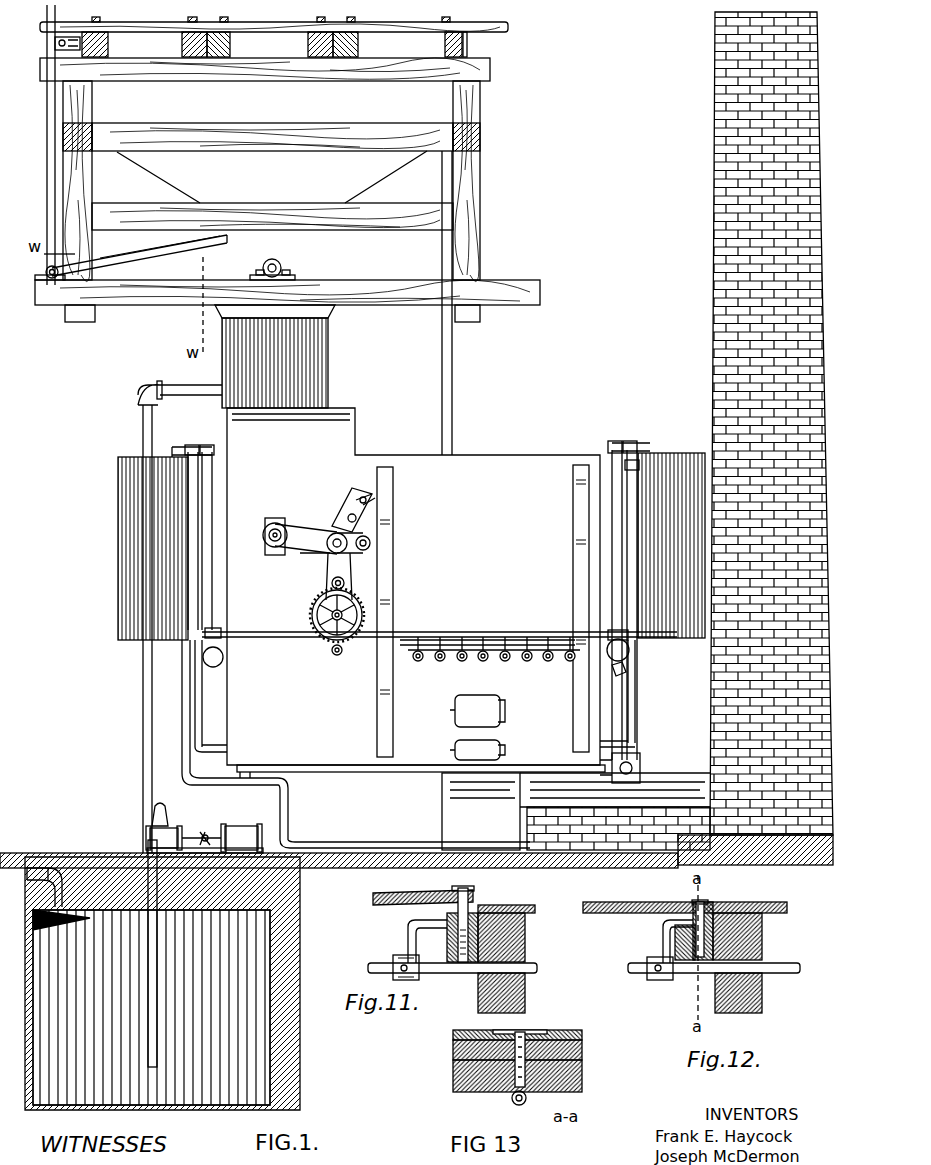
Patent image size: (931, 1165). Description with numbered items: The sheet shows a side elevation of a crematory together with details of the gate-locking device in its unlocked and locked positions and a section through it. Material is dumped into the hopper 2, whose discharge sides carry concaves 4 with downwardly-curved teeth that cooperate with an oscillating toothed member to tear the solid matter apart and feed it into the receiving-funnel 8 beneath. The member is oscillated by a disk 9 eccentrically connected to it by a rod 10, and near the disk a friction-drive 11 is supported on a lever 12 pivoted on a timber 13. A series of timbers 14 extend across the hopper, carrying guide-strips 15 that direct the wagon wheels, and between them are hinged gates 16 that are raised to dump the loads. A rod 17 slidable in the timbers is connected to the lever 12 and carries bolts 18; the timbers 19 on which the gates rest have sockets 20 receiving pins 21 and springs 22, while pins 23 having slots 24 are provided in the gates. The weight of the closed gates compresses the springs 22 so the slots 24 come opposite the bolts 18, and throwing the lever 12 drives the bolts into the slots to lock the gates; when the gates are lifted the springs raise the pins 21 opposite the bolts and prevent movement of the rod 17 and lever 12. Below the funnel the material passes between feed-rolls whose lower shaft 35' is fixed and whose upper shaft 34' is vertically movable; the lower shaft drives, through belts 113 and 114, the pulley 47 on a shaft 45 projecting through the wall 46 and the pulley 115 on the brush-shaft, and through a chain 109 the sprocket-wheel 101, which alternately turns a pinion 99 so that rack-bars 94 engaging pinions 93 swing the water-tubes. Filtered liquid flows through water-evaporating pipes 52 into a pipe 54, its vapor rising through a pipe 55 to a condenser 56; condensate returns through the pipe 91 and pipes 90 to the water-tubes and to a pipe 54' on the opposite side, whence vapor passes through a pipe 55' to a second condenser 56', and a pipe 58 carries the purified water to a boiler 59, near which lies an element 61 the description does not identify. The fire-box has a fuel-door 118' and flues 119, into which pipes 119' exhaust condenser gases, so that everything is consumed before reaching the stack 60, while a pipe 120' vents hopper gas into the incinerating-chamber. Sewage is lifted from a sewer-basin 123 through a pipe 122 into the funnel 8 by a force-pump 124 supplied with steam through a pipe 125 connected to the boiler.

In FIG. 1, the hopper 2 is at (372, 185).
In FIG. 1, the concaves 4 is at (290, 262).
In FIG. 1, the receiving-funnel 8 is at (330, 341).
In FIG. 1, the disk 9 is at (106, 270).
In FIG. 1, the rod 10 is at (136, 258).
In FIG. 1, the friction-drive 11 is at (43, 270).
In FIG. 1, the lever 12 is at (47, 212).
In FIG. 1, the timber 13 is at (158, 305).
In FIG. 1, the timbers 14 is at (109, 45).
In FIG. 11, the timbers 14 is at (527, 953).
In FIG. 12, the timbers 14 is at (750, 994).
In FIG. 13, the timbers 14 is at (568, 1072).
In FIG. 1, the guide-strips 15 is at (100, 18).
In FIG. 11, the hinged gates 16 is at (405, 893).
In FIG. 12, the hinged gates 16 is at (635, 902).
In FIG. 13, the hinged gates 16 is at (550, 1024).
In FIG. 1, the rod 17 is at (55, 43).
In FIG. 12, the rod 17 is at (685, 973).
In FIG. 13, the rod 17 is at (510, 1100).
In FIG. 12, the bolts 18 is at (663, 938).
In FIG. 13, the bolts 18 is at (526, 1098).
In FIG. 11, the timbers 19 is at (450, 955).
In FIG. 12, the timbers 19 is at (713, 940).
In FIG. 11, the sockets 20 is at (470, 898).
In FIG. 11, the pins 21 is at (447, 915).
In FIG. 12, the pins 21 is at (720, 920).
In FIG. 13, the pins 21 is at (515, 1062).
In FIG. 11, the springs 22 is at (470, 945).
In FIG. 12, the springs 22 is at (700, 952).
In FIG. 13, the springs 22 is at (515, 1086).
In FIG. 12, the pins 23 is at (710, 900).
In FIG. 13, the pins 23 is at (545, 1030).
In FIG. 13, the slots 24 is at (530, 1049).
In FIG. 1, the shaft of upper roll 34' is at (415, 499).
In FIG. 1, the shaft of lower roll 35' is at (306, 539).
In FIG. 1, the shaft 45 is at (268, 547).
In FIG. 1, the wall 46 is at (413, 586).
In FIG. 1, the pulley 47 is at (345, 515).
In FIG. 1, the water-evaporating pipes 52 is at (628, 683).
In FIG. 1, the pipe 54 is at (641, 648).
In FIG. 1, the pipe 54' is at (233, 648).
In FIG. 1, the pipe 55 is at (644, 600).
In FIG. 1, the pipe 55' is at (226, 537).
In FIG. 1, the condenser 56 is at (672, 530).
In FIG. 1, the condenser 56' is at (125, 548).
In FIG. 1, the pipe 58 is at (345, 744).
In FIG. 1, the boiler 59 is at (645, 778).
In FIG. 1, the stack 60 is at (710, 332).
In FIG. 1, the boiler 61 is at (442, 818).
In FIG. 1, the pipes 90 is at (498, 640).
In FIG. 1, the pipe 91 is at (238, 632).
In FIG. 1, the pinions 93 is at (428, 661).
In FIG. 1, the rack-bars 94 is at (516, 640).
In FIG. 1, the pinion 99 is at (340, 659).
In FIG. 1, the sprocket-wheel 101 is at (363, 612).
In FIG. 1, the chain 109 is at (345, 581).
In FIG. 1, the belt 113 is at (302, 553).
In FIG. 1, the belt 114 is at (347, 540).
In FIG. 1, the pulley 115 is at (370, 545).
In FIG. 1, the fuel-door 118' is at (496, 724).
In FIG. 1, the flues 119 is at (483, 611).
In FIG. 1, the pipes 119' is at (439, 696).
In FIG. 1, the pipe 120' is at (471, 303).
In FIG. 1, the pipe 122 is at (143, 430).
In FIG. 1, the sewer-basin 123 is at (169, 953).
In FIG. 1, the force-pump 124 is at (175, 832).
In FIG. 1, the pipe 125 is at (358, 772).